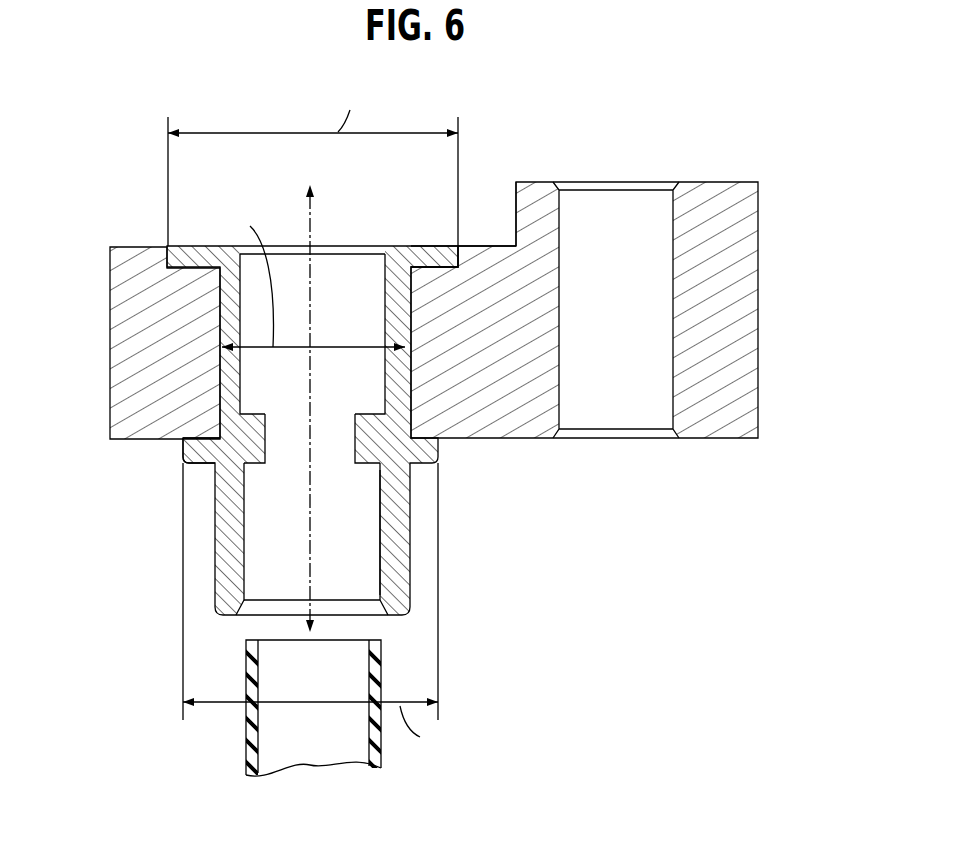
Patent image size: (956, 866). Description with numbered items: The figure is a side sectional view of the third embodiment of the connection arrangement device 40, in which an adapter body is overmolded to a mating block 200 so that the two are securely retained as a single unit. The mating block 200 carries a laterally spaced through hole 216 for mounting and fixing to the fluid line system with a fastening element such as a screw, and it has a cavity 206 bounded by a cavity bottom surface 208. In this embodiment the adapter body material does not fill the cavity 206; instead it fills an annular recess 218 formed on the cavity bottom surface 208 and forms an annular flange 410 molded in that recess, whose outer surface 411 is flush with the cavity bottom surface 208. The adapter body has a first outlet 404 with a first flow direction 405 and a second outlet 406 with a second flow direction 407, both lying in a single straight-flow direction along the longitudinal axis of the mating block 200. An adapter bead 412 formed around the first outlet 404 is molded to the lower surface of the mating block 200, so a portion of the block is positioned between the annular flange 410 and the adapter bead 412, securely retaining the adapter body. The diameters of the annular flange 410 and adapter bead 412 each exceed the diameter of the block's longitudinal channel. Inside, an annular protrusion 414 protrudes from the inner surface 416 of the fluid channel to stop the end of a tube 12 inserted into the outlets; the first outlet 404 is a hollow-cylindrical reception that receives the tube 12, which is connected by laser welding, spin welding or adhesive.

The connection arrangement device 40 is at (721, 143).
The mating block 200 is at (745, 275).
The through hole 216 is at (660, 362).
The annular recess 218 is at (153, 287).
The cavity 206 is at (477, 206).
The cavity bottom surface 208 is at (495, 236).
The annular flange 410 is at (177, 269).
The outer surface 411 is at (415, 243).
The adapter bead 412 is at (195, 462).
The second outlet 406 is at (334, 266).
The second flow direction 407 is at (307, 213).
The annular protrusion 414 is at (363, 450).
The inner surface 416 is at (368, 550).
The first flow direction 405 is at (310, 583).
The first outlet 404 is at (380, 583).
The tube 12 is at (246, 745).